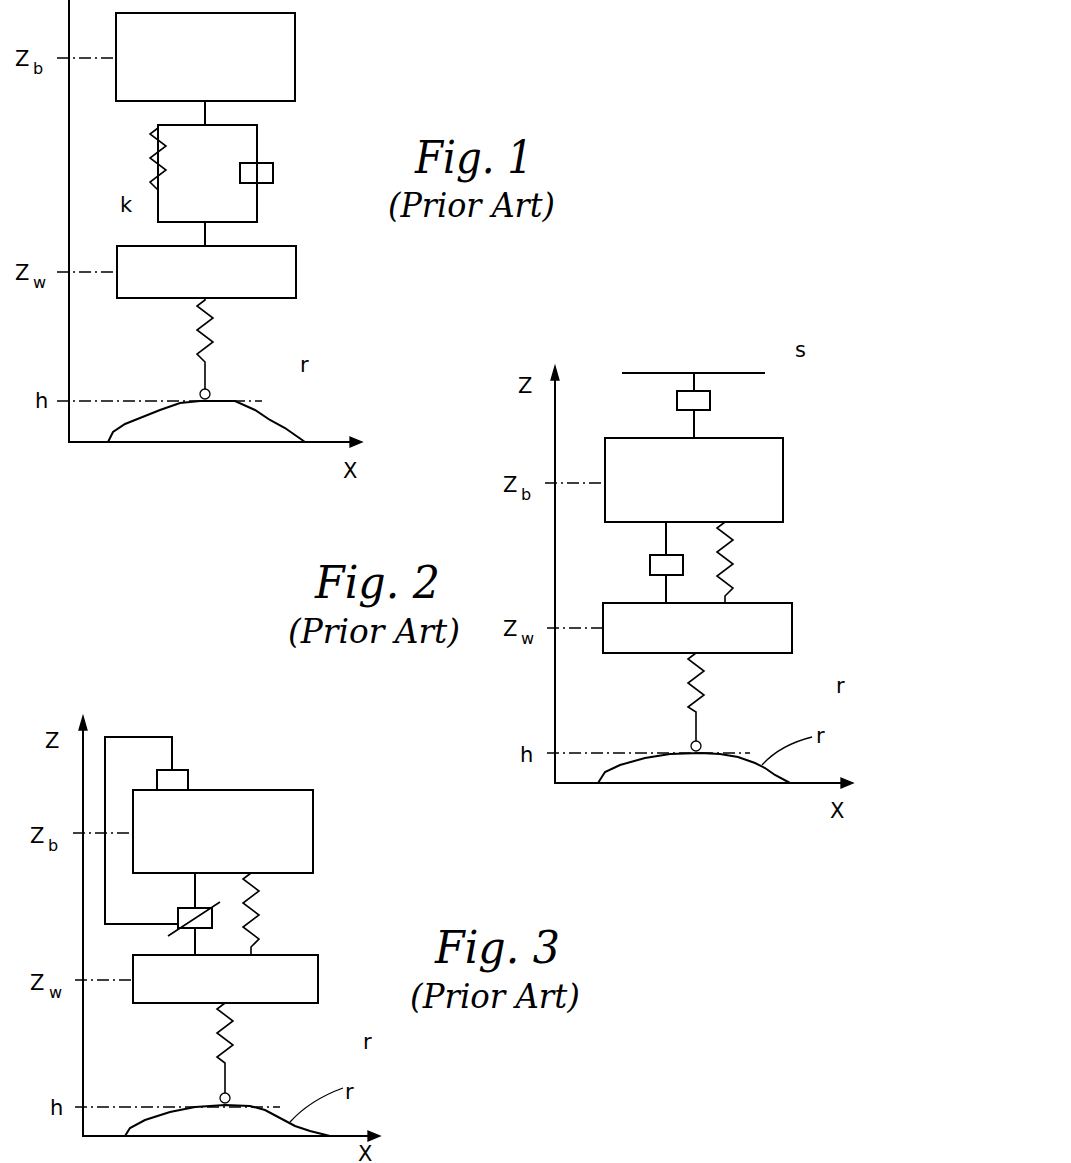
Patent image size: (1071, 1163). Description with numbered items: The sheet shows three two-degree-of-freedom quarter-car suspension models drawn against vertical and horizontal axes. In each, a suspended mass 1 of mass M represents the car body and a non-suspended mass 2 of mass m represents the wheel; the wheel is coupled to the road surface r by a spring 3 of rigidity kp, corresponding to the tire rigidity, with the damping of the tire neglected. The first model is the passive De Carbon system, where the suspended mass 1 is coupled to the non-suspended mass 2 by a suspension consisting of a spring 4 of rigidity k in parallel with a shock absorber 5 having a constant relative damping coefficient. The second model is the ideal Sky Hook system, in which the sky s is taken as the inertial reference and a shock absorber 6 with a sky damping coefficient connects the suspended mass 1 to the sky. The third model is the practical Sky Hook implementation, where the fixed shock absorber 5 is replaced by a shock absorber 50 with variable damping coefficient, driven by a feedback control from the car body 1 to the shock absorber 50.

In FIG. 1, the suspended mass 1 is at (295, 58).
In FIG. 2, the suspended mass 1 is at (783, 483).
In FIG. 3, the suspended mass 1 is at (313, 833).
In FIG. 1, the non-suspended mass 2 is at (296, 272).
In FIG. 2, the non-suspended mass 2 is at (760, 653).
In FIG. 3, the non-suspended mass 2 is at (295, 1003).
In FIG. 1, the spring 3 is at (204, 350).
In FIG. 2, the spring 3 is at (695, 702).
In FIG. 3, the spring 3 is at (222, 1055).
In FIG. 1, the spring 4 is at (153, 156).
In FIG. 2, the spring 4 is at (742, 573).
In FIG. 3, the spring 4 is at (258, 923).
In FIG. 1, the shock absorber 5 is at (273, 173).
In FIG. 2, the shock absorber 5 is at (650, 570).
In FIG. 2, the shock absorber 6 is at (677, 400).
In FIG. 3, the shock absorber 50 is at (178, 925).